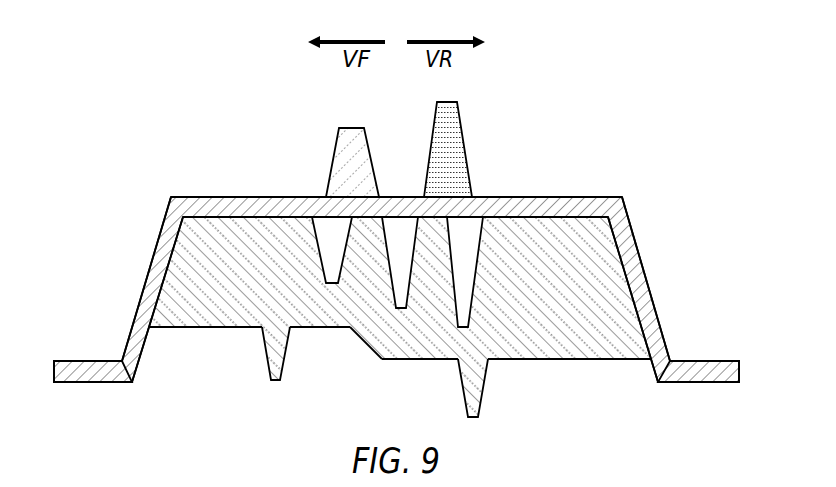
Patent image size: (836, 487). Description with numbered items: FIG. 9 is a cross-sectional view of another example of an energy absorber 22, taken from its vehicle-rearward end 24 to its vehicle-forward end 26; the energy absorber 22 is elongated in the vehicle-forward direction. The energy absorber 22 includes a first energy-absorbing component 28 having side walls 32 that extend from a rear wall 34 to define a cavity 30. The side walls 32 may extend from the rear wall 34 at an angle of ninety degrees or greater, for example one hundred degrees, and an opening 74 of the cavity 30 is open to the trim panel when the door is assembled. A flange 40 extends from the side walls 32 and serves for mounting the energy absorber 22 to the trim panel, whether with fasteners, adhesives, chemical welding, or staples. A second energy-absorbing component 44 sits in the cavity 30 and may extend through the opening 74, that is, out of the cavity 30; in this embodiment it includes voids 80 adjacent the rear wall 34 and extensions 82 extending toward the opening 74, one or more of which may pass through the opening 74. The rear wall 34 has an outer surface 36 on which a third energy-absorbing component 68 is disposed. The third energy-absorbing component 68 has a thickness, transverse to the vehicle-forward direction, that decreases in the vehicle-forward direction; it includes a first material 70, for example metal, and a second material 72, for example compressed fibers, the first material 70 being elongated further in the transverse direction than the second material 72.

The energy absorber 22 is at (688, 150).
The vehicle-rearward end 24 is at (652, 275).
The vehicle-forward end 26 is at (140, 278).
The first energy-absorbing component 28 is at (170, 195).
The cavity 30 is at (363, 387).
The side walls 32 is at (166, 284).
The rear wall 34 is at (286, 223).
The outer surface 36 is at (520, 195).
The flange 40 is at (75, 352).
The second energy-absorbing component 44 is at (363, 343).
The third energy-absorbing component 68 is at (351, 117).
The first material 70 is at (466, 160).
The second material 72 is at (371, 162).
The opening 74 is at (172, 372).
The voids 80 is at (329, 267).
The extensions 82 is at (273, 383).